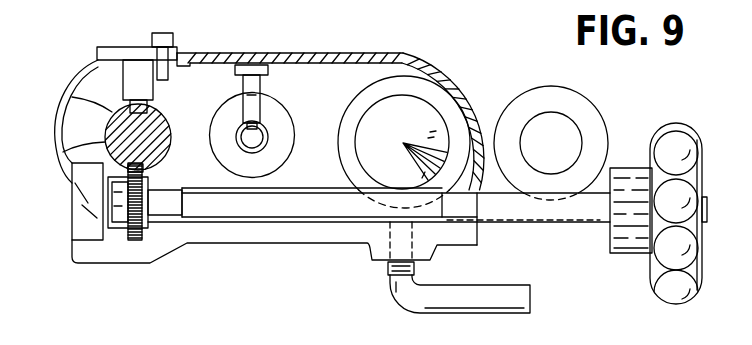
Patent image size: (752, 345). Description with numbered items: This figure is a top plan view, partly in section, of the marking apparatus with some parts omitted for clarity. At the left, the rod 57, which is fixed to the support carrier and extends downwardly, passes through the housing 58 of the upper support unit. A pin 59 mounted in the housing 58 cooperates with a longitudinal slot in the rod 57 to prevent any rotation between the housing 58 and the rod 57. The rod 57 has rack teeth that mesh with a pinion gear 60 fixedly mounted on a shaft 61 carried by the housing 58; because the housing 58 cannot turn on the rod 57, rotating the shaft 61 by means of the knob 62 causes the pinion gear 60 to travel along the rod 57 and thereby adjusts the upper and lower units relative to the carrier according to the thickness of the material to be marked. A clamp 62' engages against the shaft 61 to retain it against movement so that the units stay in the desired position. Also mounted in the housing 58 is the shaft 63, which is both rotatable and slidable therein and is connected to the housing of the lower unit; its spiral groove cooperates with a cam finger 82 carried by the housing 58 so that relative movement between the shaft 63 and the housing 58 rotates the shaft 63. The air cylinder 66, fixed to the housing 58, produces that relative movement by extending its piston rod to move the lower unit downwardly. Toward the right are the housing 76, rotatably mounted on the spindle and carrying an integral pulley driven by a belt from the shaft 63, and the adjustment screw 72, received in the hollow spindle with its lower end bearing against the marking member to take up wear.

The rod 57 is at (62, 158).
The housing 58 is at (74, 85).
The pin 59 is at (72, 95).
The pinion gear 60 is at (135, 241).
The shaft 61 is at (223, 218).
The knob 62 is at (674, 225).
The clamp 62' is at (438, 273).
The shaft 63 is at (243, 128).
The air cylinder 66 is at (442, 105).
The adjustment screw 72 is at (572, 127).
The housing 76 is at (569, 82).
The cam finger 82 is at (268, 83).